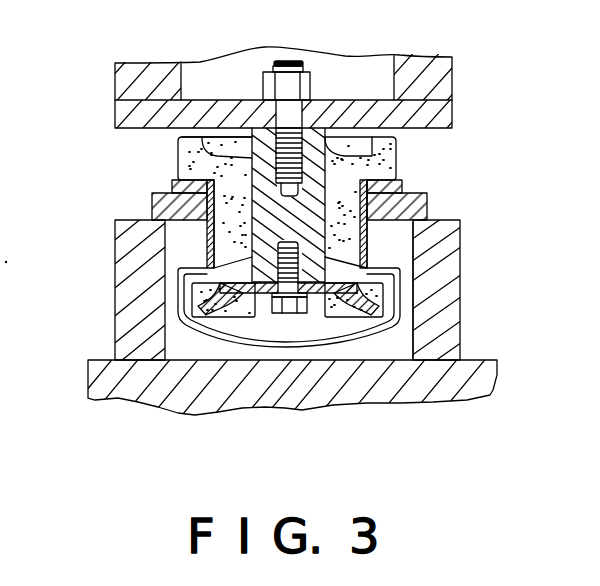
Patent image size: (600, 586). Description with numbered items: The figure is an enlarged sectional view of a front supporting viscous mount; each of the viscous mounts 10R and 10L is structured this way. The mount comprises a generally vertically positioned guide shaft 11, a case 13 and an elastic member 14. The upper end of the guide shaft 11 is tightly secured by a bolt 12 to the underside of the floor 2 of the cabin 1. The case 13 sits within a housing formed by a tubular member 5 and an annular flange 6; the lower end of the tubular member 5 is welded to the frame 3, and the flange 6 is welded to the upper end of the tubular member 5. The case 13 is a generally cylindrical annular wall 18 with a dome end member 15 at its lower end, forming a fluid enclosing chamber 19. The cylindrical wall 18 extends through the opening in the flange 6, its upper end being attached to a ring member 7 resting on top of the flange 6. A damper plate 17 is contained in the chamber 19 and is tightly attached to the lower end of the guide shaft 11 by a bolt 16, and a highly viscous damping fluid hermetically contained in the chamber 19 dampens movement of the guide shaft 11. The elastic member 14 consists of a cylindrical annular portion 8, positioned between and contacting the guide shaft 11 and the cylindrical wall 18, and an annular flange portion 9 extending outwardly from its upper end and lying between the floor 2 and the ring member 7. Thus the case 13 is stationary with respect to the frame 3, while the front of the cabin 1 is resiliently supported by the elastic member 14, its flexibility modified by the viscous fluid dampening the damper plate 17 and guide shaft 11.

The cabin 1 is at (408, 108).
The floor 2 is at (453, 110).
The frame 3 is at (452, 383).
The tubular member 5 is at (460, 312).
The annular flange 6 is at (281, 186).
The ring member 7 is at (172, 181).
The cylindrical annular portion 8 is at (376, 247).
The annular flange portion 9 is at (185, 151).
The viscous mount 10L is at (162, 166).
The viscous mount 10R is at (219, 202).
The guide shaft 11 is at (394, 165).
The bolt 12 is at (266, 90).
The case 13 is at (416, 255).
The elastic member 14 is at (415, 207).
The dome end member 15 is at (218, 343).
The bolt 16 is at (290, 313).
The damper plate 17 is at (196, 312).
The cylindrical annular wall 18 is at (207, 237).
The fluid enclosing chamber 19 is at (283, 340).